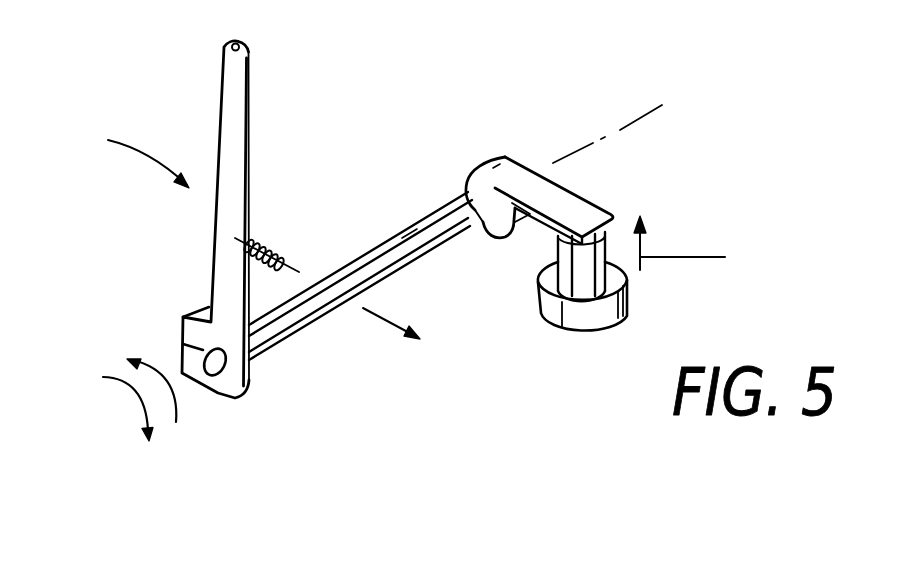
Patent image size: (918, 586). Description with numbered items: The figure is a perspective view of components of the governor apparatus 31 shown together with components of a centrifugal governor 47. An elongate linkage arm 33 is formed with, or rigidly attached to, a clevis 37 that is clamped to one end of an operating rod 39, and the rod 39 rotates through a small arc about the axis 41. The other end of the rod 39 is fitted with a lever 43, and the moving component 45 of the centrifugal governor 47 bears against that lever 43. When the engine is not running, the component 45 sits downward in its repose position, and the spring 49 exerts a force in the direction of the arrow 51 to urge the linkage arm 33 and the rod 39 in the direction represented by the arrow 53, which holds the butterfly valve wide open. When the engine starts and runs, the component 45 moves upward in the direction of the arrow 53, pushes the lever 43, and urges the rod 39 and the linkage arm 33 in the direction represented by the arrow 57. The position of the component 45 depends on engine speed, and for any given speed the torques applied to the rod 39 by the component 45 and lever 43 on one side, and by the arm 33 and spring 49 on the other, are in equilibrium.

The governor apparatus 31 is at (122, 151).
The linkage arm 33 is at (249, 58).
The clevis 37 is at (183, 316).
The operating rod 39 is at (393, 240).
The axis 41 is at (627, 123).
The lever 43 is at (583, 200).
The moving component 45 is at (551, 263).
The centrifugal governor 47 is at (575, 350).
The spring 49 is at (275, 237).
The arrow 51 is at (378, 317).
The arrow 53 is at (62, 410).
The arrow 57 is at (179, 408).